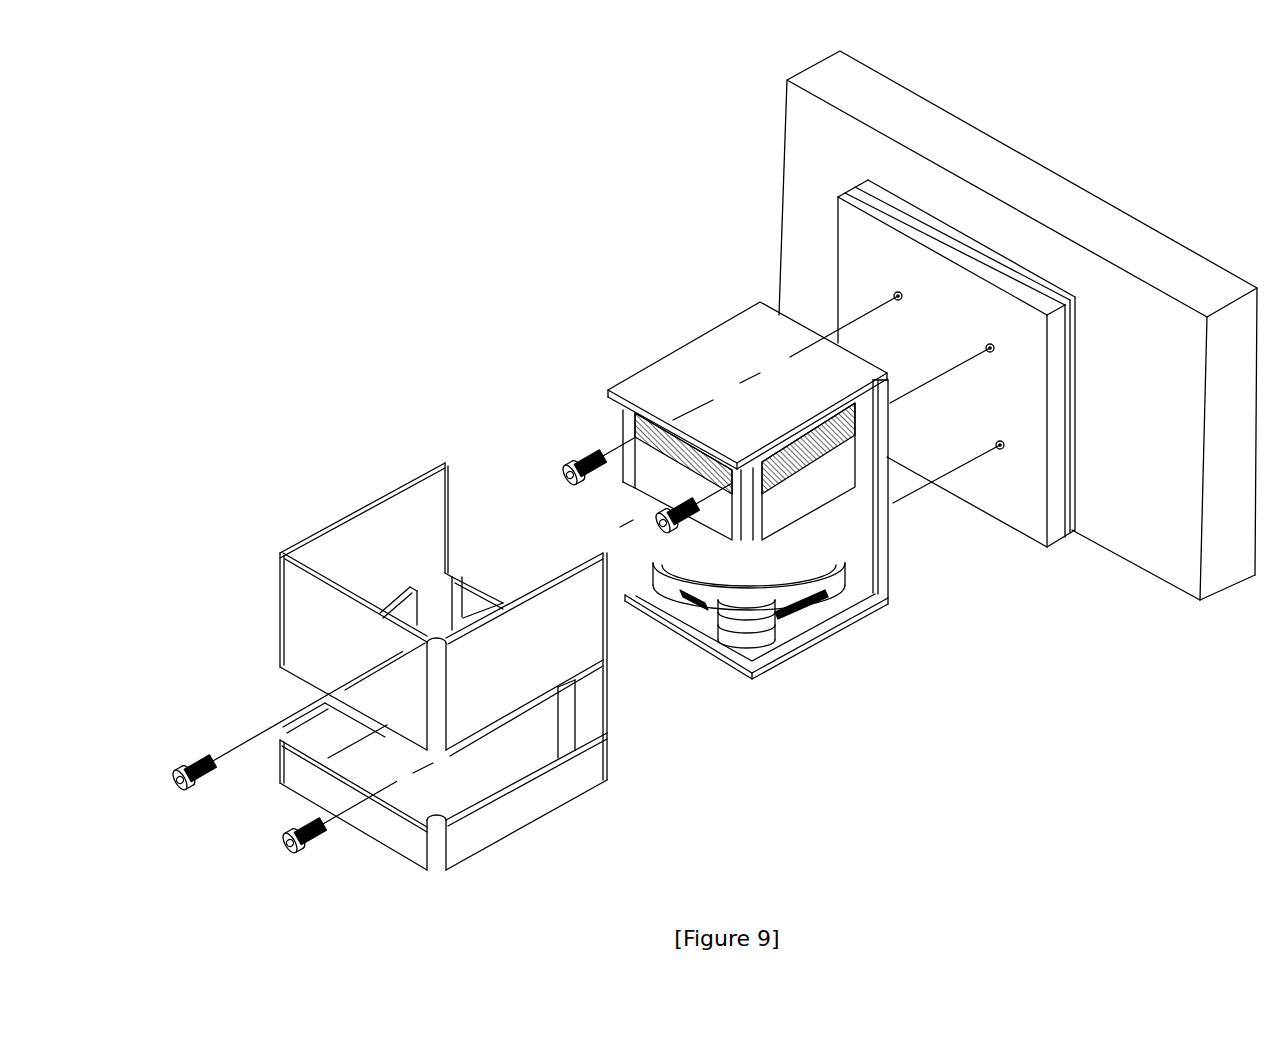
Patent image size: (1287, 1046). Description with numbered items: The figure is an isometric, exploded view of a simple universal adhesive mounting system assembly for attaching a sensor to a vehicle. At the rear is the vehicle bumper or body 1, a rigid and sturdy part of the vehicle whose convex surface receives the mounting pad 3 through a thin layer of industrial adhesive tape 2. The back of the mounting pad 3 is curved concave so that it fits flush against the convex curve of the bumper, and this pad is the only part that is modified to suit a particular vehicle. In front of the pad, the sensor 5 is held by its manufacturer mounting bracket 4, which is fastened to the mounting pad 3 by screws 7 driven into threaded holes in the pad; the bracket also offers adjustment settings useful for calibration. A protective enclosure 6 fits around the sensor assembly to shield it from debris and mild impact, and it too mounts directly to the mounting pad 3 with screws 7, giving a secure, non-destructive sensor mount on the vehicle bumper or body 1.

The vehicle bumper or body 1 is at (961, 322).
The industrial adhesive tape 2 is at (987, 409).
The mounting pad 3 is at (939, 438).
The manufacturer mounting bracket 4 is at (747, 354).
The sensor 5 is at (681, 511).
The protective enclosure 6 is at (440, 623).
The screws 7 is at (283, 823).